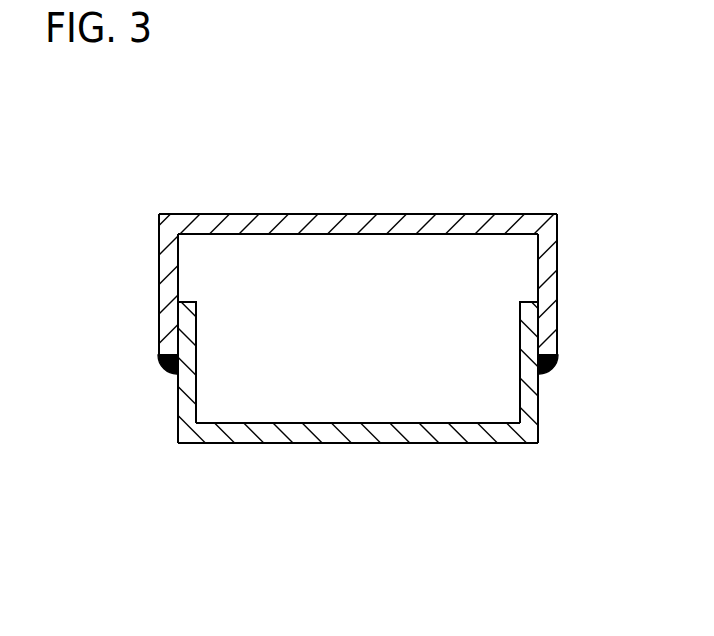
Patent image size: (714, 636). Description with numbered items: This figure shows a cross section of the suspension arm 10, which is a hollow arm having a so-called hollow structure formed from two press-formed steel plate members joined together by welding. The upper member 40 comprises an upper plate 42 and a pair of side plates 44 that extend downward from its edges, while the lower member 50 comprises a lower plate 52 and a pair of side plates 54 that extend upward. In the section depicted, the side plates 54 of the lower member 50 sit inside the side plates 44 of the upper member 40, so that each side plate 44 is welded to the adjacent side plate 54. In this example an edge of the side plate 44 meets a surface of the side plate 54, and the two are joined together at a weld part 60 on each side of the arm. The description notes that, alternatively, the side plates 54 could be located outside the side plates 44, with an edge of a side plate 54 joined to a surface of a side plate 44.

The suspension arm 10 is at (376, 597).
The upper member 40 is at (357, 293).
The upper plate 42 is at (380, 213).
The side plate 44 is at (159, 268).
The lower member 50 is at (351, 409).
The lower plate 52 is at (483, 444).
The side plate 54 is at (177, 423).
The weld part 60 is at (157, 369).